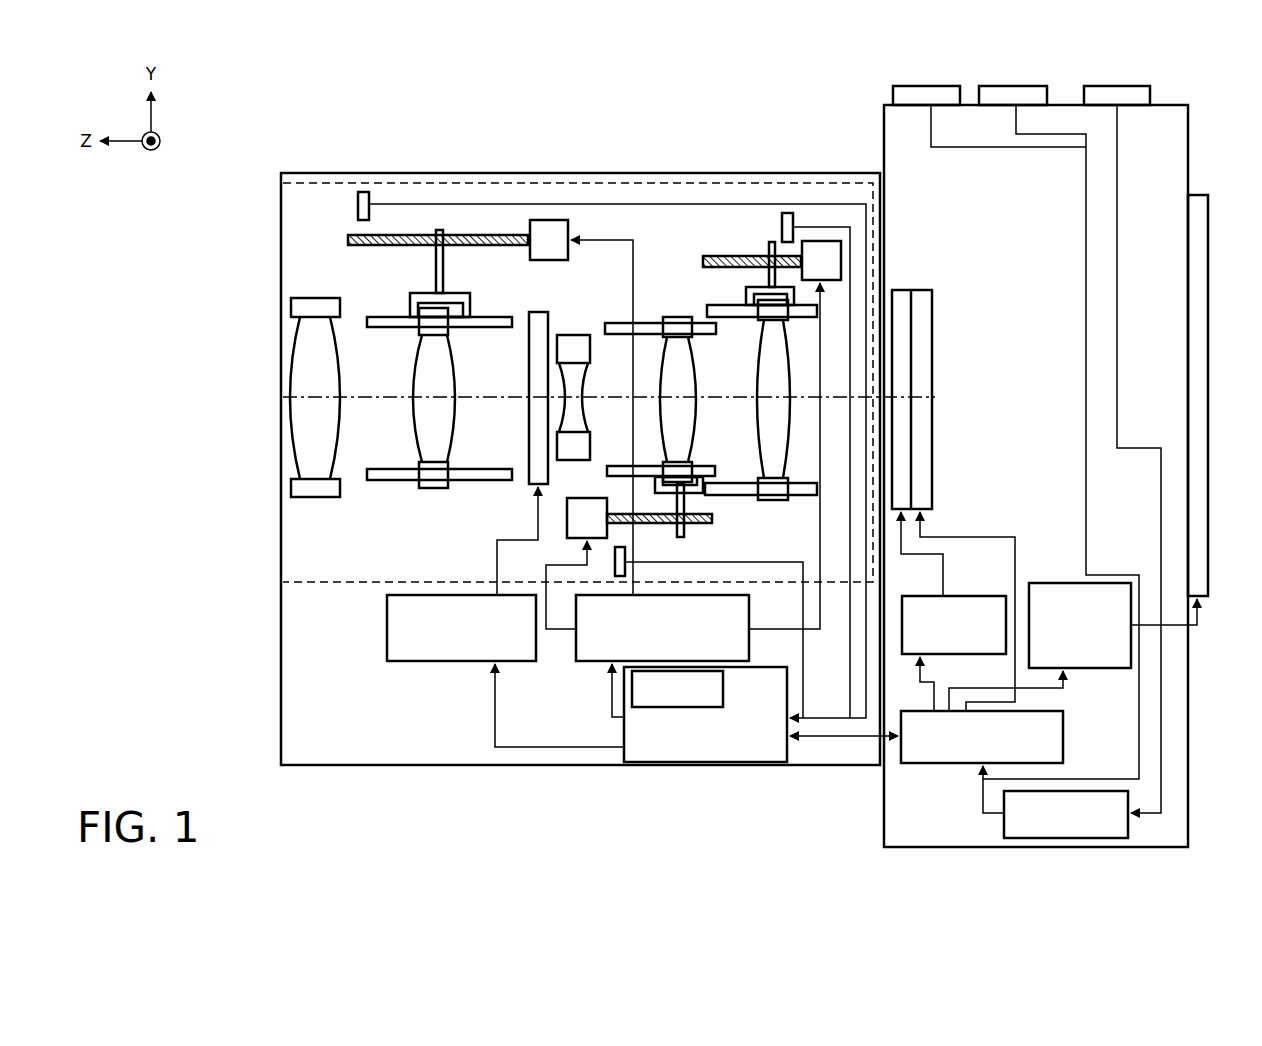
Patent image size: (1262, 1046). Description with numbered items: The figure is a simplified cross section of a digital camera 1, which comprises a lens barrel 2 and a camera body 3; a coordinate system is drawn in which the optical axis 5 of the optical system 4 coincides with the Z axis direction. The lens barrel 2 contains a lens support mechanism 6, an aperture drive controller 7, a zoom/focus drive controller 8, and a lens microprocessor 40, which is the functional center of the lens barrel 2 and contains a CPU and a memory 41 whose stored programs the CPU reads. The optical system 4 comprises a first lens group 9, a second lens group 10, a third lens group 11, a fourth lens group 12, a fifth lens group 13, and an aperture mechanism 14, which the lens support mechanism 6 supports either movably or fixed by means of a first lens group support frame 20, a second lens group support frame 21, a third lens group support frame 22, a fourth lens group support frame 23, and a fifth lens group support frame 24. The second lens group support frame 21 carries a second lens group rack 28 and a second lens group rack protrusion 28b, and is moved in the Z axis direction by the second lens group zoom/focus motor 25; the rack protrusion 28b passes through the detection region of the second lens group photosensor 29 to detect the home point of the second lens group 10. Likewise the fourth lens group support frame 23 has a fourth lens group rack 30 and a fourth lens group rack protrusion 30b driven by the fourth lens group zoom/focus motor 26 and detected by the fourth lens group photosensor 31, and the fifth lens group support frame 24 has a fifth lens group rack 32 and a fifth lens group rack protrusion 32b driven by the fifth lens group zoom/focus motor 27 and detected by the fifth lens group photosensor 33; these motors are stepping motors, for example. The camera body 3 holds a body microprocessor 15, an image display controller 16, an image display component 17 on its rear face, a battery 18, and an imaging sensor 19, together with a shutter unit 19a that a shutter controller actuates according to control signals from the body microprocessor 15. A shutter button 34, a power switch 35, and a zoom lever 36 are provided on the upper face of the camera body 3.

The digital camera 1 is at (243, 208).
The lens barrel 2 is at (367, 738).
The camera body 3 is at (893, 803).
The optical system 4 is at (318, 535).
The optical axis 5 is at (365, 390).
The lens support mechanism 6 is at (336, 587).
The aperture drive controller 7 is at (472, 656).
The zoom/focus drive controller 8 is at (605, 656).
The first lens group 9 is at (297, 358).
The second lens group 10 is at (434, 430).
The third lens group 11 is at (582, 383).
The fourth lens group 12 is at (683, 358).
The fifth lens group 13 is at (770, 453).
The aperture mechanism 14 is at (538, 313).
The body microprocessor 15 is at (950, 763).
The image display controller 16 is at (1090, 668).
The image display component 17 is at (1195, 557).
The battery 18 is at (1119, 825).
The imaging sensor 19 is at (920, 443).
The shutter unit 19a is at (903, 288).
The first lens group support frame 20 is at (297, 490).
The second lens group support frame 21 is at (434, 470).
The third lens group support frame 22 is at (567, 343).
The fourth lens group support frame 23 is at (672, 327).
The fifth lens group support frame 24 is at (777, 490).
The second lens group zoom/focus motor 25 is at (549, 232).
The fourth lens group zoom/focus motor 26 is at (584, 510).
The fifth lens group zoom/focus motor 27 is at (827, 262).
The second lens group rack 28 is at (443, 232).
The second lens group rack protrusion 28b is at (440, 275).
The second lens group photosensor 29 is at (363, 190).
The fourth lens group rack 30 is at (682, 498).
The fourth lens group rack protrusion 30b is at (679, 540).
The fourth lens group photosensor 31 is at (620, 558).
The fifth lens group rack 32 is at (763, 288).
The fifth lens group rack protrusion 32b is at (772, 242).
The fifth lens group photosensor 33 is at (789, 212).
The shutter button 34 is at (919, 93).
The power switch 35 is at (1010, 93).
The zoom lever 36 is at (1120, 93).
The lens microprocessor 40 is at (715, 757).
The memory 41 is at (643, 708).